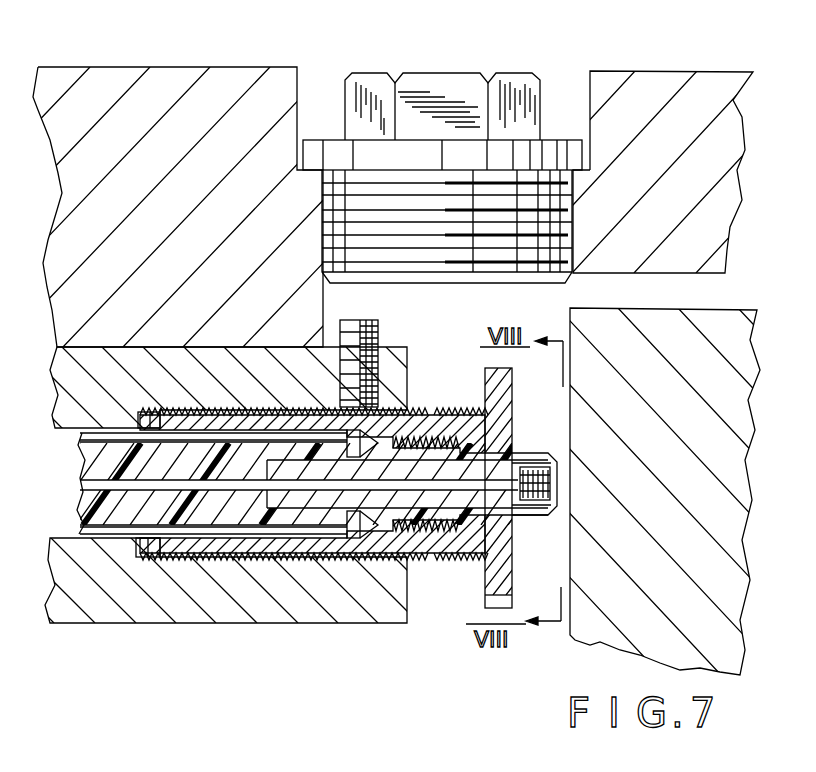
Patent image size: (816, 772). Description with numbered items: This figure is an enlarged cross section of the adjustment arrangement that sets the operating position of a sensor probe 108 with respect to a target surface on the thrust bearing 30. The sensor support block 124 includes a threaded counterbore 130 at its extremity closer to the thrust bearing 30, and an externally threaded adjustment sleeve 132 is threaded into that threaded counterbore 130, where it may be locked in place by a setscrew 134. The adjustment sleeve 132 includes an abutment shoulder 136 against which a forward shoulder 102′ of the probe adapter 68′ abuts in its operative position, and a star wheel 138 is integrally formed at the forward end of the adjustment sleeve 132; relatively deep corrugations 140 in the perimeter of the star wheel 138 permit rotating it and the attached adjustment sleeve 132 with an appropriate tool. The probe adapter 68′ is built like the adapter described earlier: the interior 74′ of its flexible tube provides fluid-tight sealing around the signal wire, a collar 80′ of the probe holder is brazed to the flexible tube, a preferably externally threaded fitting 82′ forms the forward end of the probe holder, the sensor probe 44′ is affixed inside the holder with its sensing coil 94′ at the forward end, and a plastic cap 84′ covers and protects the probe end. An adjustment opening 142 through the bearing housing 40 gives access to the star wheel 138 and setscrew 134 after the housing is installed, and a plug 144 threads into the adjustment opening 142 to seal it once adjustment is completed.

The bearing housing 40 is at (183, 73).
The thrust bearing 30 is at (712, 362).
The plug 144 is at (487, 158).
The adjustment opening 142 is at (573, 232).
The setscrew 134 is at (378, 332).
The adjustment sleeve 132 is at (418, 410).
The abutment shoulder 136 is at (468, 407).
The star wheel 138 is at (495, 481).
The plastic cap 84′ is at (570, 475).
The sensing coil 94′ is at (553, 478).
The sensor probe 108 is at (512, 517).
The corrugations 140 is at (507, 601).
The fitting 82′ is at (437, 512).
The forward shoulder 102′ is at (455, 515).
The sensor probe 44′ is at (303, 497).
The collar 80′ is at (274, 570).
The sensor support block 124 is at (262, 622).
The threaded counterbore 130 is at (147, 557).
The probe adapter 68′ is at (80, 451).
The interior 74′ is at (78, 507).